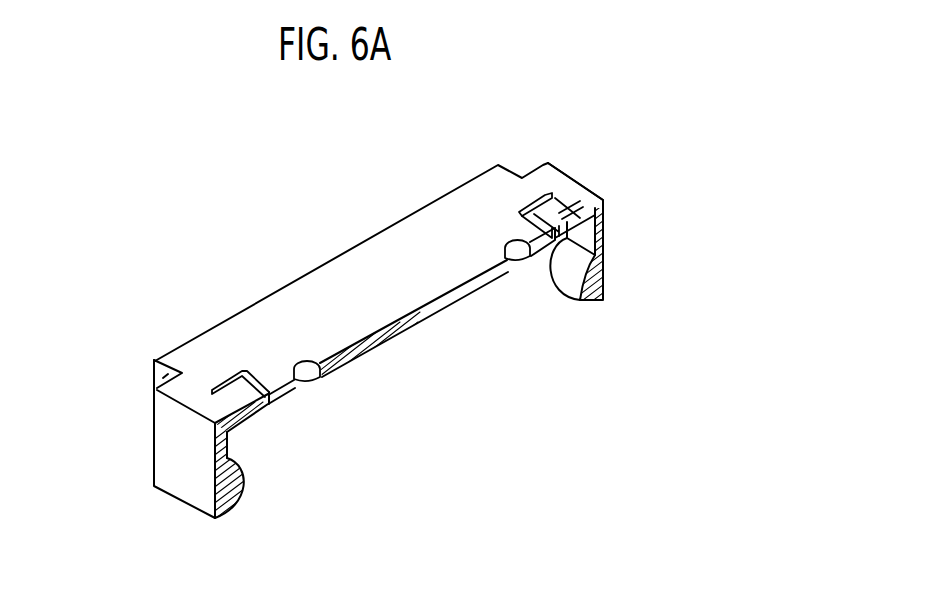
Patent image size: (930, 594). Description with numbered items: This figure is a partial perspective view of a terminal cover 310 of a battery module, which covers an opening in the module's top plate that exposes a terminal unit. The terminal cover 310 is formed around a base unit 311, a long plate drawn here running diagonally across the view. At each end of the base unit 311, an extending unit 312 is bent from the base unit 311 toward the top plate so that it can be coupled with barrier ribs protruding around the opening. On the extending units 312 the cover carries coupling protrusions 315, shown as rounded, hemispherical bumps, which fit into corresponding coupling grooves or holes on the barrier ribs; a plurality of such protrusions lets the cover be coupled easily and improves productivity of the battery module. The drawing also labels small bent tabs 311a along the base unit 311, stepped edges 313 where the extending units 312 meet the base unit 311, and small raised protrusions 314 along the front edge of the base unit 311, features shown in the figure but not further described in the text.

The terminal cover 310 is at (301, 239).
The base unit 311 is at (398, 252).
The bent tab 311a is at (242, 393).
The extending unit 312 is at (172, 447).
The step edge 313 is at (240, 392).
The protrusion 314 is at (308, 383).
The coupling protrusion 315 is at (243, 482).